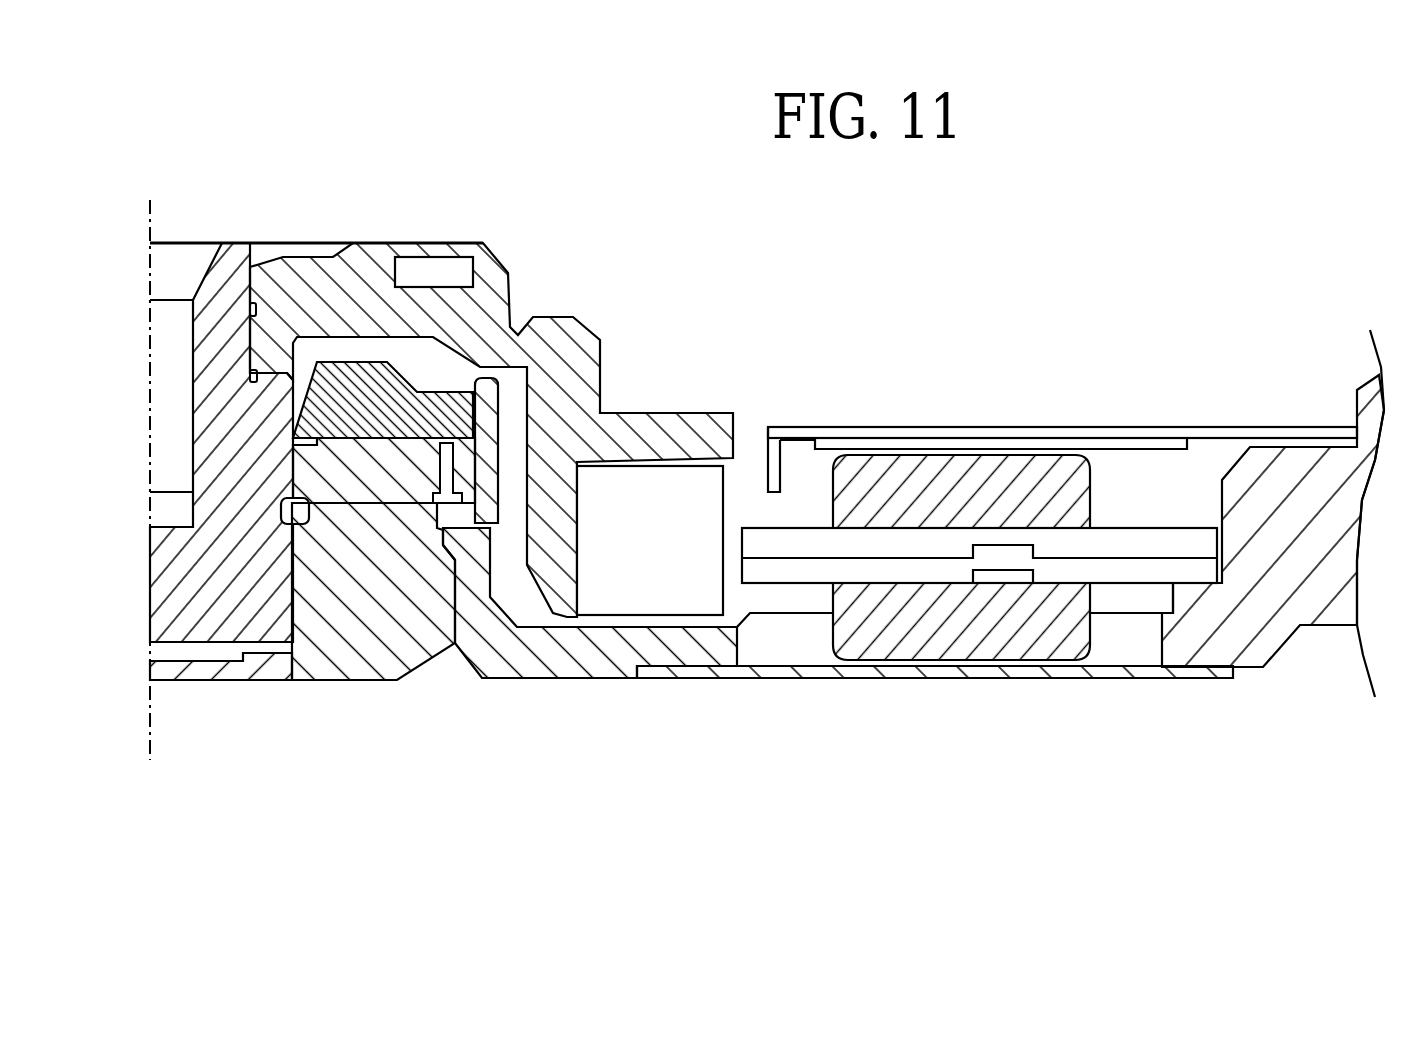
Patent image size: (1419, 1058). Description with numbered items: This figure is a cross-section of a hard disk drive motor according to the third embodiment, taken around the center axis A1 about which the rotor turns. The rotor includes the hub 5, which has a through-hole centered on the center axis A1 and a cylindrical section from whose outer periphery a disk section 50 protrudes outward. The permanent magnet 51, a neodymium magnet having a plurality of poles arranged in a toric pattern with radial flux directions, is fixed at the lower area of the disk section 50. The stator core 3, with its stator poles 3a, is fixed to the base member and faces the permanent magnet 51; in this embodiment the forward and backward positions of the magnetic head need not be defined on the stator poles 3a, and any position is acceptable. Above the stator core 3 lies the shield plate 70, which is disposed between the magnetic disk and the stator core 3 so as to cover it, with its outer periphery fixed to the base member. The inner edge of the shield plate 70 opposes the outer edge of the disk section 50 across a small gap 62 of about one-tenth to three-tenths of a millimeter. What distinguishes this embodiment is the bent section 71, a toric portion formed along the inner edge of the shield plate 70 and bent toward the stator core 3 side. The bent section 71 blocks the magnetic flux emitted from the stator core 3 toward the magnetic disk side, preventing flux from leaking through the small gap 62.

The center axis A1 is at (150, 227).
The stator core 3 is at (1130, 572).
The stator poles 3a is at (768, 580).
The hub 5 is at (540, 617).
The disk section 50 is at (623, 416).
The permanent magnet 51 is at (637, 595).
The small gap 62 is at (752, 437).
The shield plate 70 is at (955, 437).
The bent section 71 is at (782, 462).